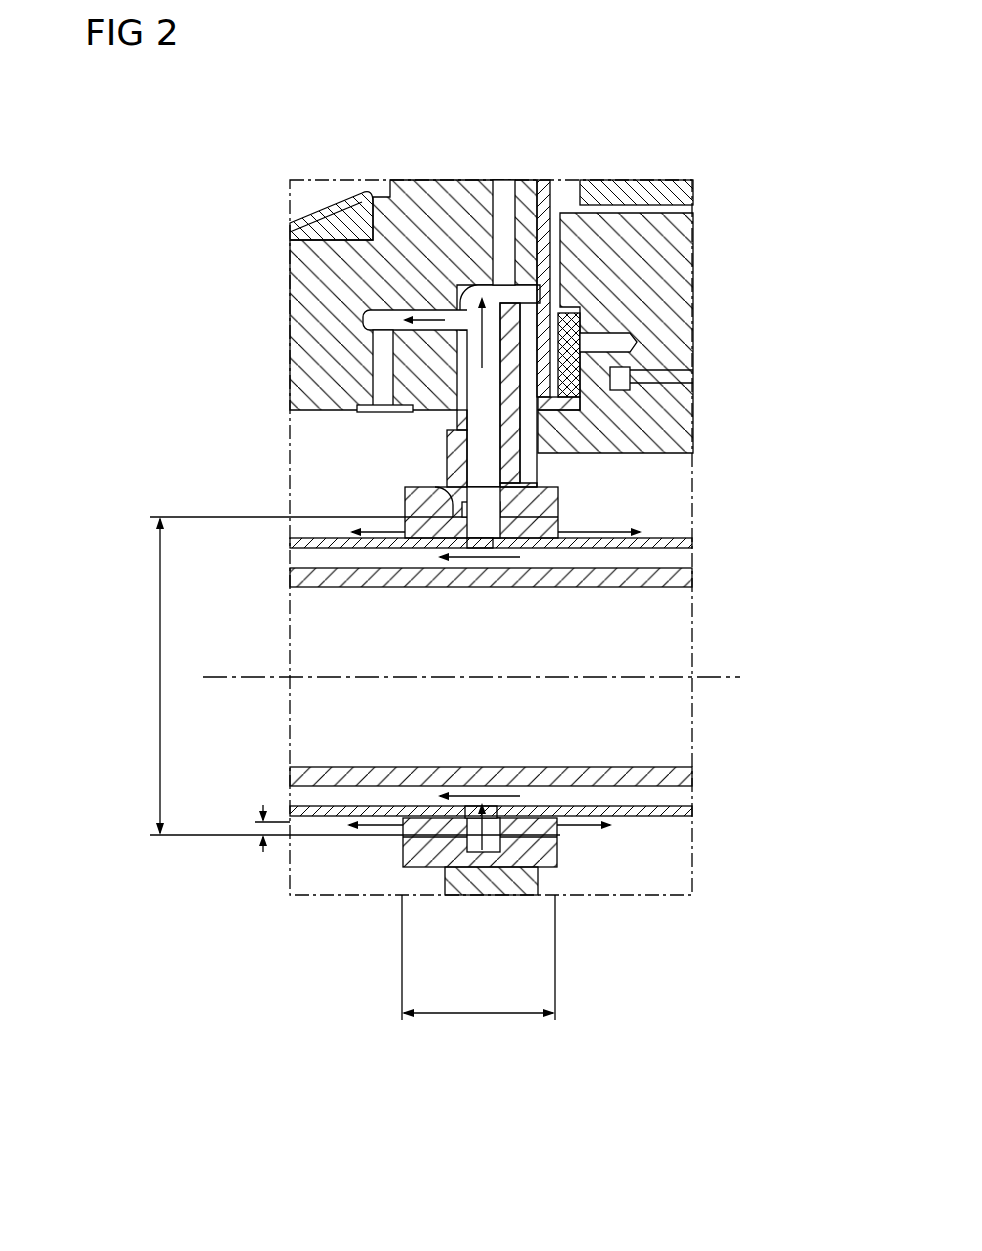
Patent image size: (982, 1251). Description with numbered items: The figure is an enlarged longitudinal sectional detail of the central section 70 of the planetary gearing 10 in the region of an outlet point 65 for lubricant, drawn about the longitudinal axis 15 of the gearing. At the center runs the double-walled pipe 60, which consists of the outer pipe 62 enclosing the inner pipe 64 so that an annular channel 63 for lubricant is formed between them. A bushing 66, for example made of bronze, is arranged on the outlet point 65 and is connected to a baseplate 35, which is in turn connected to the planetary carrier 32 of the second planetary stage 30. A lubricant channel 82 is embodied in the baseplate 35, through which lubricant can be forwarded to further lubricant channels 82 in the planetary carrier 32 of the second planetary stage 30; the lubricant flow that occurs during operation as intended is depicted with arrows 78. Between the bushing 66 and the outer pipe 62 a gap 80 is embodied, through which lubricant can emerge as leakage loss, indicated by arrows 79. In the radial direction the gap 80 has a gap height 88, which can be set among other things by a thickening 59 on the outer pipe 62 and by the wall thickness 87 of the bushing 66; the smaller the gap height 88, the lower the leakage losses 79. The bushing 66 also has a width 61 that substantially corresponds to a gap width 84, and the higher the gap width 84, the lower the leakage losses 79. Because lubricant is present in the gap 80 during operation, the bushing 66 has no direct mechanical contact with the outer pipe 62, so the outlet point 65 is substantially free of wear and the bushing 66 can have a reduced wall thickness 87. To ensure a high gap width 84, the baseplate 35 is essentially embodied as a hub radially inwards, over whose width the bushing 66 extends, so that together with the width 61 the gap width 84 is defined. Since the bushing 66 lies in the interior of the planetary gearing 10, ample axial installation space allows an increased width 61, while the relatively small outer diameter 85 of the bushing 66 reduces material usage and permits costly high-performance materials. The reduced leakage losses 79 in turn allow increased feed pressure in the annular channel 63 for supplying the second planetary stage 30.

The planetary gearing 10 is at (625, 97).
The central section 70 is at (197, 223).
The planetary carrier 32 is at (356, 295).
The second planetary stage 30 is at (330, 278).
The lubricant channel 82 is at (400, 317).
The gap 80 is at (367, 576).
The gap height 88 is at (407, 505).
The arrows (lubricant flow) 78 is at (560, 345).
The baseplate 35 is at (558, 505).
The bushing 66 is at (560, 527).
The arrows (leakage losses) 79 is at (350, 532).
The double-walled pipe 60 is at (503, 675).
The outer pipe 62 is at (537, 675).
The annular channel 63 is at (537, 671).
The inner pipe 64 is at (693, 577).
The thickening 59 is at (525, 545).
The outlet point 65 is at (493, 870).
The axis of rotation 15 is at (215, 677).
The outer diameter 85 is at (160, 660).
The wall thickness 87 is at (262, 828).
The gap width 84 is at (478, 992).
The width 61 is at (485, 1013).